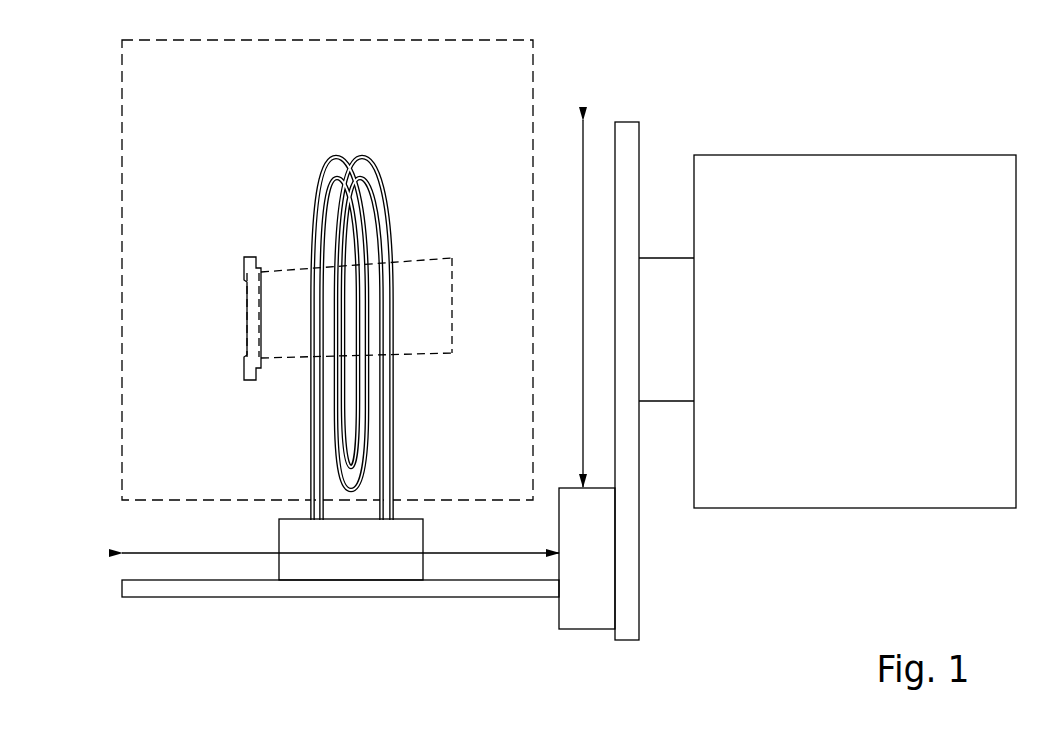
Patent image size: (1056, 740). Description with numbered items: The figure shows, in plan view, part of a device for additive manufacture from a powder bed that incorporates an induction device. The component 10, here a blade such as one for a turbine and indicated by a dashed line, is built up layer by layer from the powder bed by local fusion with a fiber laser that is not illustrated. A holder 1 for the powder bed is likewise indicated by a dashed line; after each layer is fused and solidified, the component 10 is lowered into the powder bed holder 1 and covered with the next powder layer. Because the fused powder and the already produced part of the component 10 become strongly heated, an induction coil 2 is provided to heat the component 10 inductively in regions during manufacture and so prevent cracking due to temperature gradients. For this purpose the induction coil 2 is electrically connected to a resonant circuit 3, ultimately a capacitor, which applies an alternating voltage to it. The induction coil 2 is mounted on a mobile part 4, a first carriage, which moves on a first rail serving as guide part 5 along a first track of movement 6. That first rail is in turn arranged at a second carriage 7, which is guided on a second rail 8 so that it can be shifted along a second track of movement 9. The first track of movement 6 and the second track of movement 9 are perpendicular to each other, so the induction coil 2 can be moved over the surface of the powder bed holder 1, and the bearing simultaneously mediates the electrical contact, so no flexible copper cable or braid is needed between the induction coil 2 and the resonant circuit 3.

The holder 1 is at (186, 88).
The induction coil 2 is at (342, 412).
The resonant circuit 3 is at (885, 187).
The mobile part 4 is at (362, 565).
The guide part 5 is at (390, 585).
The first track of movement 6 is at (317, 553).
The second carriage 7 is at (590, 585).
The second rail 8 is at (625, 543).
The second track of movement 9 is at (583, 172).
The component 10 is at (293, 302).